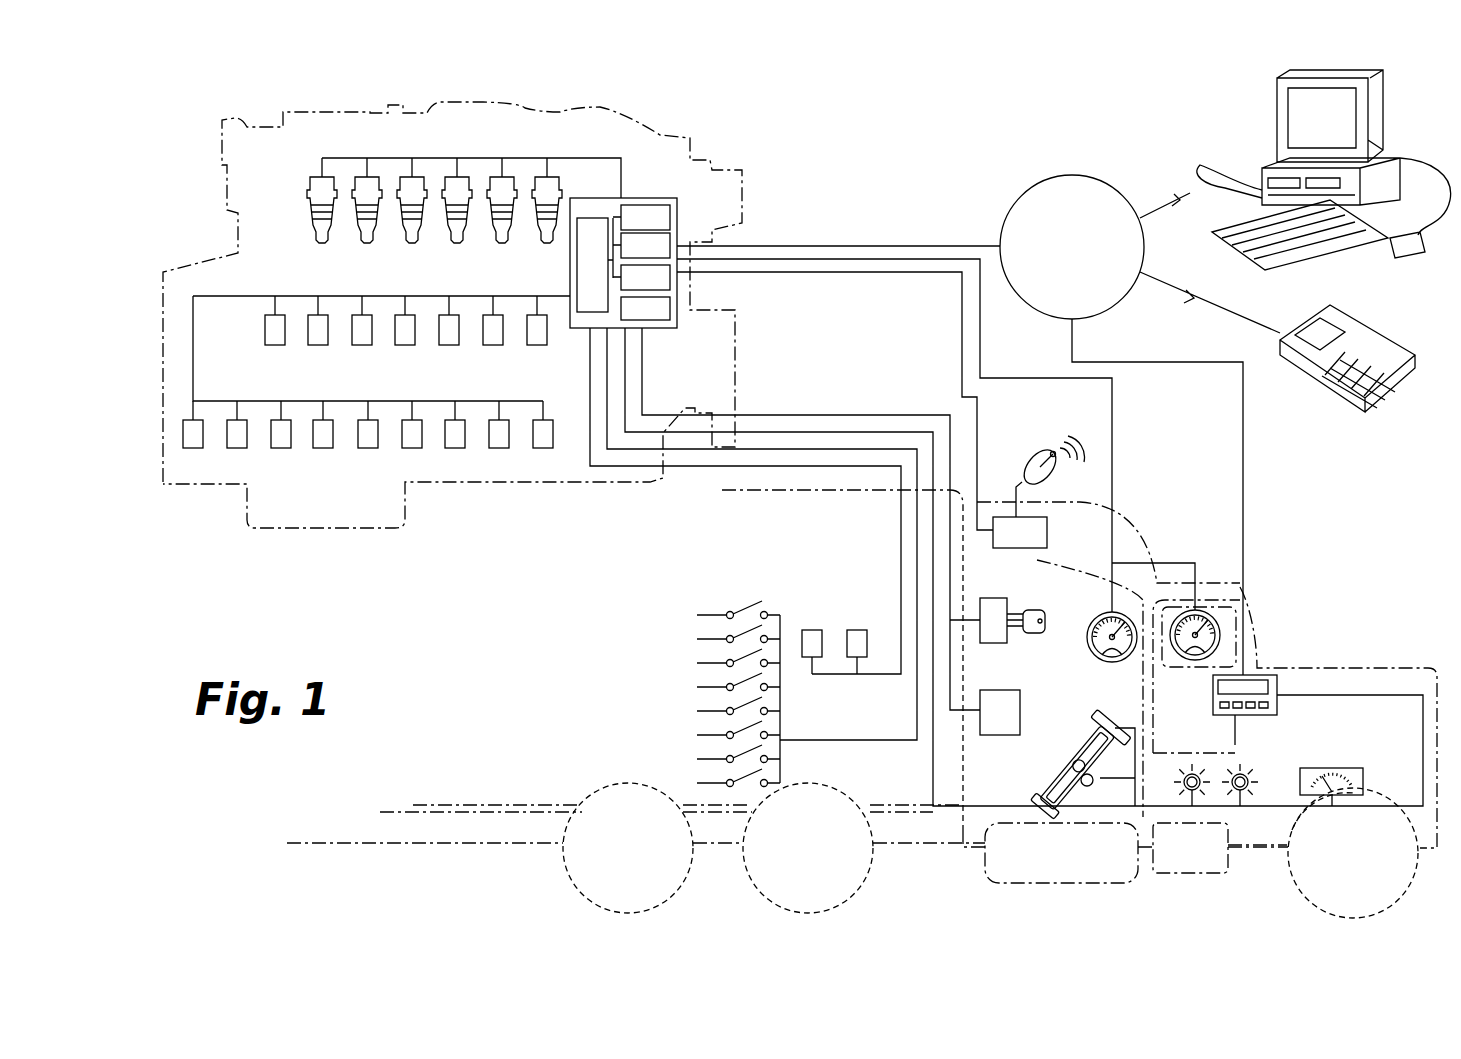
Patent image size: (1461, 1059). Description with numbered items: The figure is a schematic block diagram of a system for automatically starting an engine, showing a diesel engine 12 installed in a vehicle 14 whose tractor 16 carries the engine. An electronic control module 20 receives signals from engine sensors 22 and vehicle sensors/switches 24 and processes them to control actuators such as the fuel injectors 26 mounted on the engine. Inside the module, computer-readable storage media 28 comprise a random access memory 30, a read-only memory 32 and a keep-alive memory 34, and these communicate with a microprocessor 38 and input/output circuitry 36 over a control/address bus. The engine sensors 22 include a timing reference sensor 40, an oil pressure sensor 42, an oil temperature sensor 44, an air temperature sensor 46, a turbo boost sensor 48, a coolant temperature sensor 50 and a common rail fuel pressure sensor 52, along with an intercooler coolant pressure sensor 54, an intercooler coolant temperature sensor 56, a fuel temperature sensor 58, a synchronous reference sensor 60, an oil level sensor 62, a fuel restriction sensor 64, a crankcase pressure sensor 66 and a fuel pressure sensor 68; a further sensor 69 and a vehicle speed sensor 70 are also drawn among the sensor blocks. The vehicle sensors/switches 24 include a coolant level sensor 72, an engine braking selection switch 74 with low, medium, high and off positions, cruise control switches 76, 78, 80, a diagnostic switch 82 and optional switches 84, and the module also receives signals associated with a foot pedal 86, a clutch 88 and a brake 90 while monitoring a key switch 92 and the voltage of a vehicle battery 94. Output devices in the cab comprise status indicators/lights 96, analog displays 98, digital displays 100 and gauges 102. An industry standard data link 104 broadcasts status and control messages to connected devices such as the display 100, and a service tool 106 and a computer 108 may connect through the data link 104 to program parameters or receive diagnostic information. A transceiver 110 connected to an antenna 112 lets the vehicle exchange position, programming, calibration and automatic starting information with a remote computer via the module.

The diesel engine 12 is at (490, 102).
The vehicle 14 is at (1147, 516).
The tractor 16 is at (1318, 662).
The electronic control module 20 is at (624, 219).
The engine sensors 22 is at (346, 371).
The vehicle sensors/switches 24 is at (621, 692).
The fuel injectors 26 is at (372, 138).
The computer-readable storage media 28 is at (677, 216).
The random access memory 30 is at (655, 205).
The read-only memory 32 is at (672, 240).
The keep-alive memory 34 is at (672, 277).
The input/output circuitry 36 is at (672, 312).
The microprocessor 38 is at (577, 262).
The timing reference sensor 40 is at (547, 328).
The oil pressure sensor 42 is at (503, 328).
The oil temperature sensor 44 is at (459, 328).
The air temperature sensor 46 is at (415, 328).
The turbo boost sensor 48 is at (372, 328).
The coolant temperature sensor 50 is at (328, 328).
The fuel pressure sensor 52 is at (285, 328).
The intercooler coolant pressure sensor 54 is at (203, 433).
The intercooler coolant temperature sensor 56 is at (247, 433).
The fuel temperature sensor 58 is at (291, 433).
The synchronous reference sensor 60 is at (333, 433).
The oil level sensor 62 is at (378, 433).
The fuel restriction sensor 64 is at (422, 433).
The crankcase pressure sensor 66 is at (465, 433).
The fuel pressure sensor 68 is at (509, 433).
The VSG sensor 69 is at (553, 433).
The VSS vehicle speed sensor 70 is at (865, 652).
The coolant level sensor 72 is at (822, 652).
The engine braking selection switch 74 is at (540, 734).
The cruise control switch 76 is at (595, 710).
The cruise control switch 78 is at (615, 686).
The cruise control switch 80 is at (618, 662).
The diagnostic switch 82 is at (640, 638).
The optional switches 84 is at (648, 613).
The accelerator or foot pedal 86 is at (1040, 770).
The clutch 88 is at (1118, 718).
The brake 90 is at (1098, 727).
The key switch 92 is at (1000, 643).
The vehicle battery 94 is at (990, 735).
The status indicators/lights 96 is at (1266, 762).
The analog displays 98 is at (1341, 765).
The digital displays 100 is at (1213, 690).
The analog/digital gauges 102 is at (1090, 600).
The data link 104 is at (1083, 162).
The service tool 106 is at (1350, 320).
The computer 108 is at (1385, 127).
The transceiver 110 is at (1050, 532).
The antenna 112 is at (1016, 443).